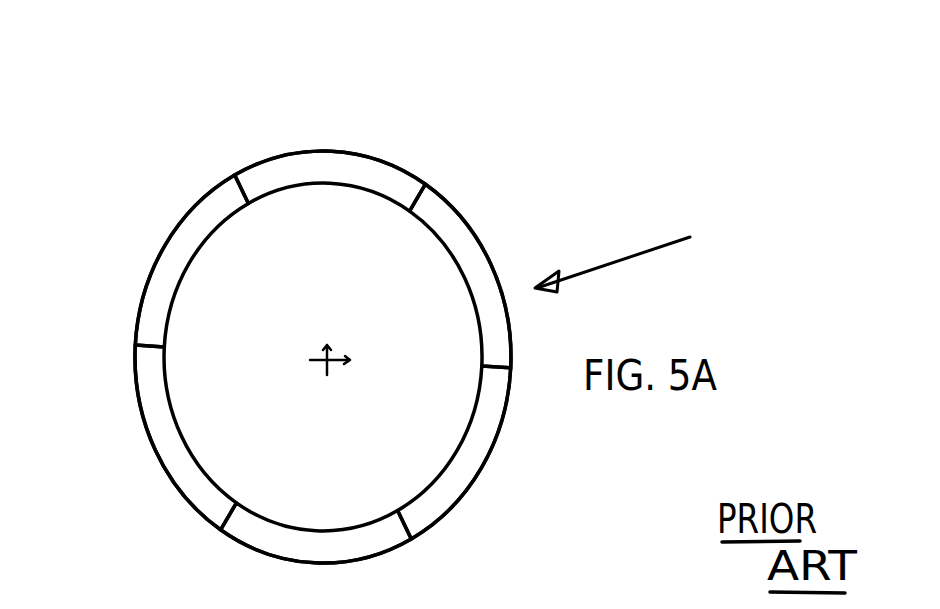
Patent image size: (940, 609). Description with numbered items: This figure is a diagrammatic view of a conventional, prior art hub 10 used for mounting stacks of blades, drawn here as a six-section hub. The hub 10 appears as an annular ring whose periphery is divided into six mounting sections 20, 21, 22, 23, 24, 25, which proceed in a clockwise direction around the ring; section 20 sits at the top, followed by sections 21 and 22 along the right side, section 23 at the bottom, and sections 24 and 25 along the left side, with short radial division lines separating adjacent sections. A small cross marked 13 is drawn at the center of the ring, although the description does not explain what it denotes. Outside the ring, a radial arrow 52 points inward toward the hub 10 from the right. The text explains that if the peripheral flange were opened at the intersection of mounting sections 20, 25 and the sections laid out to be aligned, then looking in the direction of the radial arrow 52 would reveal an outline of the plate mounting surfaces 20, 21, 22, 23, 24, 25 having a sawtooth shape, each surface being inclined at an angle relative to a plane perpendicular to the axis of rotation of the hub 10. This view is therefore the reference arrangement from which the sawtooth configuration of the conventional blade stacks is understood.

The hub 10 is at (386, 150).
The center axis 13 is at (335, 385).
The mounting section 20 is at (328, 182).
The mounting section 21 is at (458, 212).
The mounting section 22 is at (490, 468).
The mounting section 23 is at (337, 556).
The mounting section 24 is at (175, 418).
The mounting section 25 is at (195, 255).
The radial arrow 52 is at (635, 252).